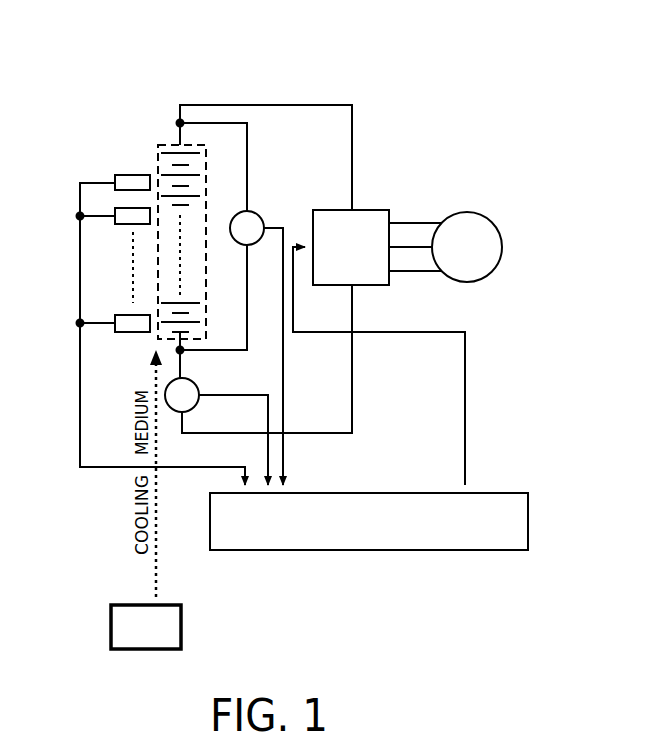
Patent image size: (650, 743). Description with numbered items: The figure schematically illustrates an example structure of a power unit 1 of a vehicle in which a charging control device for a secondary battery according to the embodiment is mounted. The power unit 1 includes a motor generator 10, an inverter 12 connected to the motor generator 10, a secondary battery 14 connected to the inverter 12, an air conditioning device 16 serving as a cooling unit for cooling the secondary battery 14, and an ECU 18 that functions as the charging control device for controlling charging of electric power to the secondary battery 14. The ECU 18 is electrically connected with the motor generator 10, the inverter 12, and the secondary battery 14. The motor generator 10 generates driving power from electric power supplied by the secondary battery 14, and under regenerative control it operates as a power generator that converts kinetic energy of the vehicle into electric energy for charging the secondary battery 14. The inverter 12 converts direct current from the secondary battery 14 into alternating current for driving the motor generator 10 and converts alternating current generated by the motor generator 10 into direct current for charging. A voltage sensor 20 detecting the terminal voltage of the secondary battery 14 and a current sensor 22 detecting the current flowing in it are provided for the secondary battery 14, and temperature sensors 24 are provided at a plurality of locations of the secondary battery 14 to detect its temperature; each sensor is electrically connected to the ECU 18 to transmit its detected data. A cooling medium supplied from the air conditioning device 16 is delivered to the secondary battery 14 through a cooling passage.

The power unit 1 is at (300, 55).
The motor generator 10 is at (480, 213).
The inverter 12 is at (373, 210).
The secondary battery 14 is at (160, 137).
The air conditioning device 16 is at (107, 642).
The ECU 18 is at (505, 493).
The voltage sensor 20 is at (257, 208).
The current sensor 22 is at (200, 383).
The temperature sensors 24 is at (127, 173).